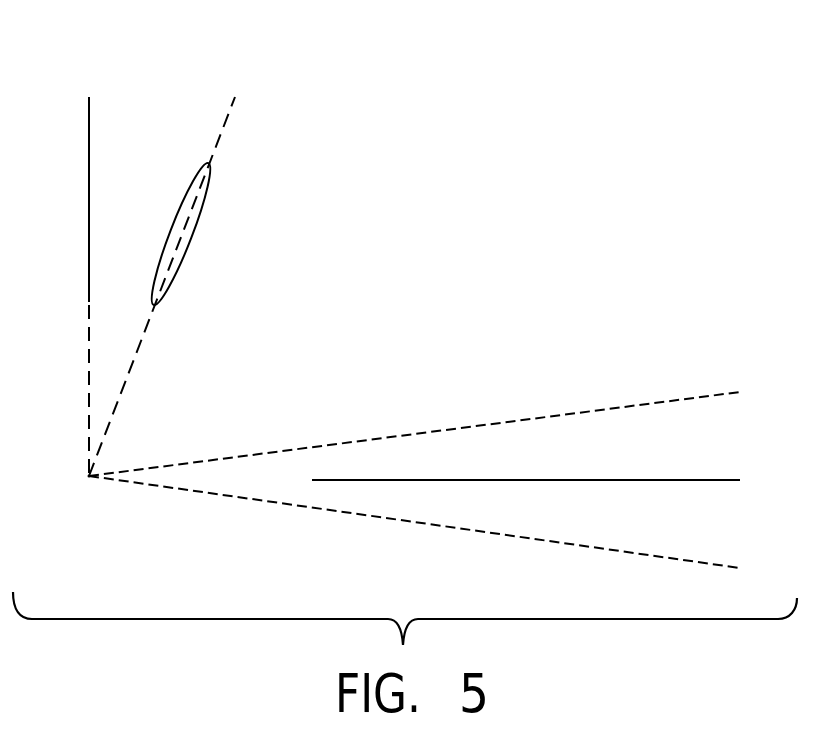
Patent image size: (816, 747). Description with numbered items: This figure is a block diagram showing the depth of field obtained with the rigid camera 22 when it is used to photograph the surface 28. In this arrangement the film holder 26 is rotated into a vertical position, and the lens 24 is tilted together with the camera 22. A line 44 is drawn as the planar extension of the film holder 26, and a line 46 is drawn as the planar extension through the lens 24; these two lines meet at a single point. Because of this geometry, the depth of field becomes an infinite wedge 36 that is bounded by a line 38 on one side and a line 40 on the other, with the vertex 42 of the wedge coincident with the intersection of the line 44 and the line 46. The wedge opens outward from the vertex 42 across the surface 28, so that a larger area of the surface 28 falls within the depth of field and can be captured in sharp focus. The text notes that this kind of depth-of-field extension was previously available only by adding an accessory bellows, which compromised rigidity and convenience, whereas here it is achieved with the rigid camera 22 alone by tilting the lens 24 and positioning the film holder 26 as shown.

The rigid camera 22 is at (138, 113).
The lens 24 is at (204, 200).
The film holder 26 is at (89, 195).
The surface 28 is at (636, 480).
The infinite wedge 36 is at (388, 413).
The line 38 is at (636, 403).
The line 40 is at (636, 554).
The vertex 42 is at (88, 478).
The line 44 is at (89, 312).
The line 46 is at (142, 346).